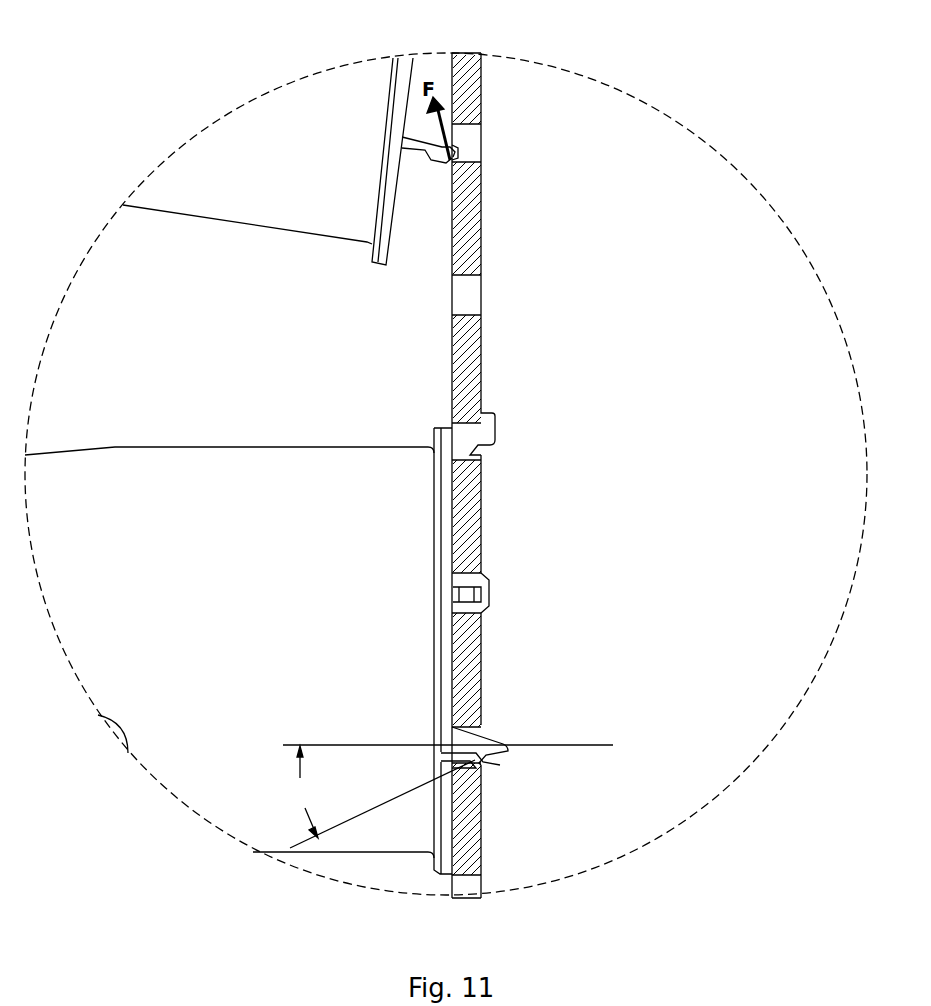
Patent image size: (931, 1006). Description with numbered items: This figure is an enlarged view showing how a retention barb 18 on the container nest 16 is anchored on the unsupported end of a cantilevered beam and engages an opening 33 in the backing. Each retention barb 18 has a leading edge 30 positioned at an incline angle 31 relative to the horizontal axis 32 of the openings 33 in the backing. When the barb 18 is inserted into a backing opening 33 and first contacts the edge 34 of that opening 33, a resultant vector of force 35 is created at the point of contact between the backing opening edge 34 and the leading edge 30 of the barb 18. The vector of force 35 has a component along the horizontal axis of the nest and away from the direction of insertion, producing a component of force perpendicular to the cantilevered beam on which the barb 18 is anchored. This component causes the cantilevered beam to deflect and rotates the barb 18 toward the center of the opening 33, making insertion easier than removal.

The container nest 16 is at (275, 155).
The retention barb 18 is at (418, 137).
The leading edge 30 is at (455, 157).
The incline angle 31 is at (382, 797).
The horizontal axis 32 is at (597, 745).
The opening 33 is at (470, 130).
The edge 34 is at (455, 160).
The vector of force 35 is at (470, 122).